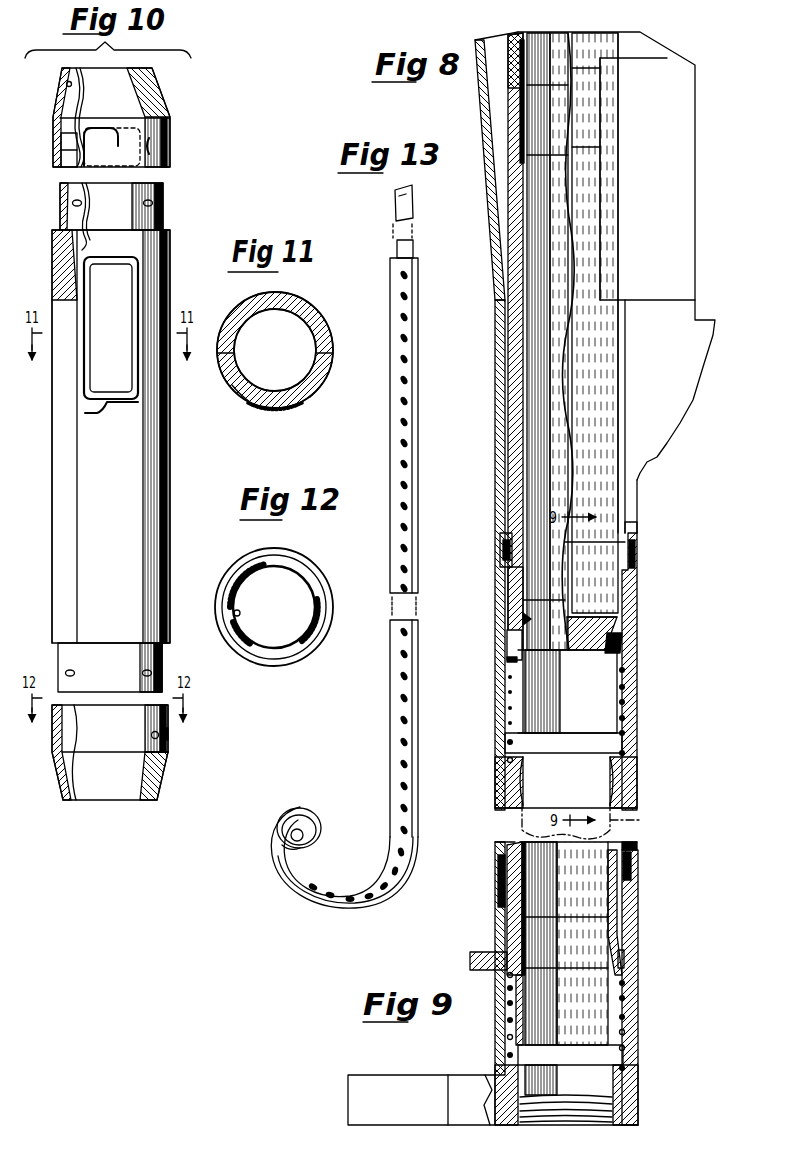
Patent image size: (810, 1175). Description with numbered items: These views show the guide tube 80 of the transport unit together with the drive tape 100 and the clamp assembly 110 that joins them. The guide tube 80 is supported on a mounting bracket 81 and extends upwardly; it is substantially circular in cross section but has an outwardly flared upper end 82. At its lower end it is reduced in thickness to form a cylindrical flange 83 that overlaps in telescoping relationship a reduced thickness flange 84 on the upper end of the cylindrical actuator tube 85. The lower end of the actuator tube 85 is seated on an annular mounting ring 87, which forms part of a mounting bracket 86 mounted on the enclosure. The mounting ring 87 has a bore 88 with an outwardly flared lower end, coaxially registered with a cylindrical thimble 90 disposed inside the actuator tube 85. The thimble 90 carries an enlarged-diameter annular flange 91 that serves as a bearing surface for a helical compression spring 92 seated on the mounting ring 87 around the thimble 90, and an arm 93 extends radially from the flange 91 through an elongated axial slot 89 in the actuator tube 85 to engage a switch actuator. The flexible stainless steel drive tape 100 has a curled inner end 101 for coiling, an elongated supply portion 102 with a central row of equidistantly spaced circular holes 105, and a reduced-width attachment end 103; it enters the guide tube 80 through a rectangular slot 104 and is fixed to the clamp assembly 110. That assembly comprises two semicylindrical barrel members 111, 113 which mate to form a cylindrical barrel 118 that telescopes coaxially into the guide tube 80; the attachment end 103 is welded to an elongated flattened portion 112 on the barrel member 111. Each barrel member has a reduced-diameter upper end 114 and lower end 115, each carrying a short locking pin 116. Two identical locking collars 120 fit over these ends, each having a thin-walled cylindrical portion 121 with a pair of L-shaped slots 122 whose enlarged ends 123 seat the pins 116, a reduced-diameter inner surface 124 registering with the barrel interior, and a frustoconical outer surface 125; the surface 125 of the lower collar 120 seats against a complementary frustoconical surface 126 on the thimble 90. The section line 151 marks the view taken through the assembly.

In FIG. 8, the guide tube 80 is at (497, 238).
In FIG. 8, the mounting bracket 81 is at (690, 229).
In FIG. 8, the outwardly flared upper end 82 is at (487, 96).
In FIG. 8, the cylindrical flange 83 is at (638, 534).
In FIG. 9, the cylindrical flange 83 is at (638, 863).
In FIG. 8, the reduced thickness flange 84 is at (636, 555).
In FIG. 9, the reduced thickness flange 84 is at (633, 880).
In FIG. 8, the actuator tube 85 is at (639, 623).
In FIG. 9, the actuator tube 85 is at (640, 986).
In FIG. 9, the mounting bracket 86 is at (411, 1076).
In FIG. 9, the annular mounting ring 87 is at (626, 1090).
In FIG. 9, the bore 88 is at (590, 1087).
In FIG. 9, the elongated axial slot 89 is at (506, 918).
In FIG. 8, the cylindrical thimble 90 is at (630, 679).
In FIG. 9, the cylindrical thimble 90 is at (508, 1000).
In FIG. 9, the enlarged-diameter annular flange 91 is at (626, 958).
In FIG. 9, the helical compression spring 92 is at (628, 1016).
In FIG. 9, the arm 93 is at (470, 960).
In FIG. 13, the drive tape 100 is at (389, 452).
In FIG. 13, the curled inner end 101 is at (308, 812).
In FIG. 13, the supply portion 102 is at (392, 692).
In FIG. 10, the attachment end 103 is at (88, 397).
In FIG. 11, the attachment end 103 is at (268, 410).
In FIG. 13, the attachment end 103 is at (397, 208).
In FIG. 8, the rectangular slot 104 is at (640, 465).
In FIG. 13, the circular holes 105 is at (403, 509).
In FIG. 10, the clamp assembly 110 is at (205, 113).
In FIG. 10, the barrel member 111 is at (55, 478).
In FIG. 11, the barrel member 111 is at (326, 386).
In FIG. 8, the barrel member 111 is at (619, 493).
In FIG. 10, the elongated flattened portion 112 is at (80, 445).
In FIG. 11, the elongated flattened portion 112 is at (246, 404).
In FIG. 8, the elongated flattened portion 112 is at (619, 370).
In FIG. 10, the barrel member 113 is at (62, 269).
In FIG. 11, the barrel member 113 is at (320, 306).
In FIG. 8, the barrel member 113 is at (512, 332).
In FIG. 10, the reduced-diameter upper end 114 is at (70, 224).
In FIG. 8, the reduced-diameter upper end 114 is at (522, 126).
In FIG. 10, the reduced-diameter lower end 115 is at (60, 655).
In FIG. 8, the reduced-diameter lower end 115 is at (505, 551).
In FIG. 9, the reduced-diameter lower end 115 is at (607, 891).
In FIG. 10, the locking pin 116 is at (73, 200).
In FIG. 10, the cylindrical barrel 118 is at (50, 521).
In FIG. 11, the cylindrical barrel 118 is at (227, 316).
In FIG. 10, the locking collar 120 is at (124, 804).
In FIG. 12, the locking collar 120 is at (326, 570).
In FIG. 8, the locking collar 120 is at (506, 54).
In FIG. 9, the locking collar 120 is at (622, 925).
In FIG. 10, the thin-walled cylindrical portion 121 is at (53, 158).
In FIG. 12, the thin-walled cylindrical portion 121 is at (262, 556).
In FIG. 8, the thin-walled cylindrical portion 121 is at (512, 589).
In FIG. 9, the thin-walled cylindrical portion 121 is at (506, 893).
In FIG. 10, the L-shaped slot 122 is at (61, 141).
In FIG. 12, the L-shaped slot 122 is at (226, 584).
In FIG. 10, the enlarged end 123 is at (113, 130).
In FIG. 10, the reduced-diameter inner surface 124 is at (67, 83).
In FIG. 12, the reduced-diameter inner surface 124 is at (236, 615).
In FIG. 8, the reduced-diameter inner surface 124 is at (522, 619).
In FIG. 10, the frustoconical outer surface 125 is at (158, 75).
In FIG. 8, the frustoconical outer surface 125 is at (500, 634).
In FIG. 8, the frustoconical surface 126 is at (624, 648).
In FIG. 8, the section line 151 is at (640, 820).